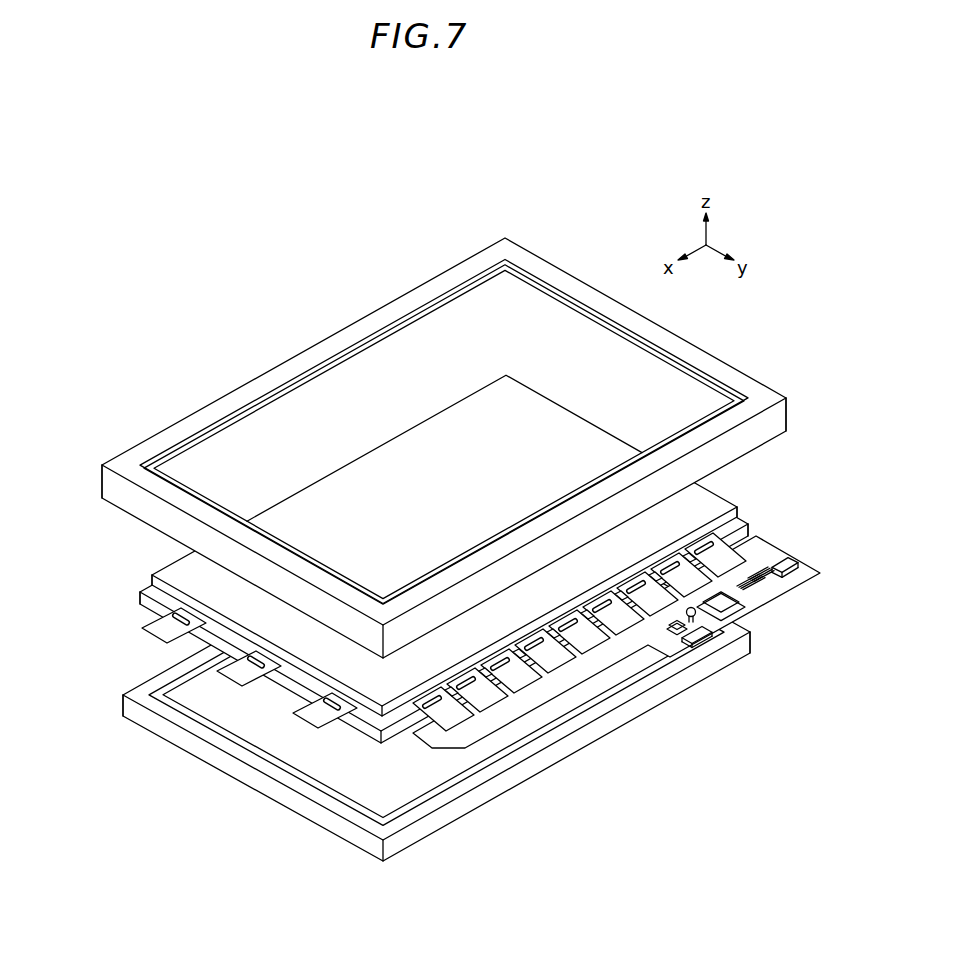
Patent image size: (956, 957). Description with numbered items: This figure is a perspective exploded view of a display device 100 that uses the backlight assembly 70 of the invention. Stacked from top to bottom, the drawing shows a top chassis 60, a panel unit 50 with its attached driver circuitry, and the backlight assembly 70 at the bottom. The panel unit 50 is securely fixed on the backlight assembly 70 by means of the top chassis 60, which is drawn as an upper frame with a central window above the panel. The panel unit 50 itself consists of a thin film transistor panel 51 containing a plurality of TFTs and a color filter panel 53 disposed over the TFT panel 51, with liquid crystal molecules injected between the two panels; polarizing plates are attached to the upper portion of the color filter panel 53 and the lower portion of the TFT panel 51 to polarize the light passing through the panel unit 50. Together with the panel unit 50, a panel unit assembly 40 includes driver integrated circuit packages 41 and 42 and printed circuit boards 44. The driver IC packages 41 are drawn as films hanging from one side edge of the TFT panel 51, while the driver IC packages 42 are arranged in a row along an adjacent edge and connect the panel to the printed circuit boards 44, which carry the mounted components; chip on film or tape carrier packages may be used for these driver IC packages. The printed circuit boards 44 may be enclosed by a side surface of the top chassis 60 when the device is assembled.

The display device 100 is at (318, 288).
The top chassis 60 is at (786, 415).
The panel unit 50 is at (469, 559).
The color filter panel 53 is at (717, 494).
The thin film transistor panel 51 is at (745, 520).
The panel unit assembly 40 is at (433, 562).
The driver integrated circuit package 41 is at (149, 635).
The driver integrated circuit package 42 is at (750, 538).
The printed circuit board 44 is at (787, 554).
The backlight assembly 70 is at (714, 667).